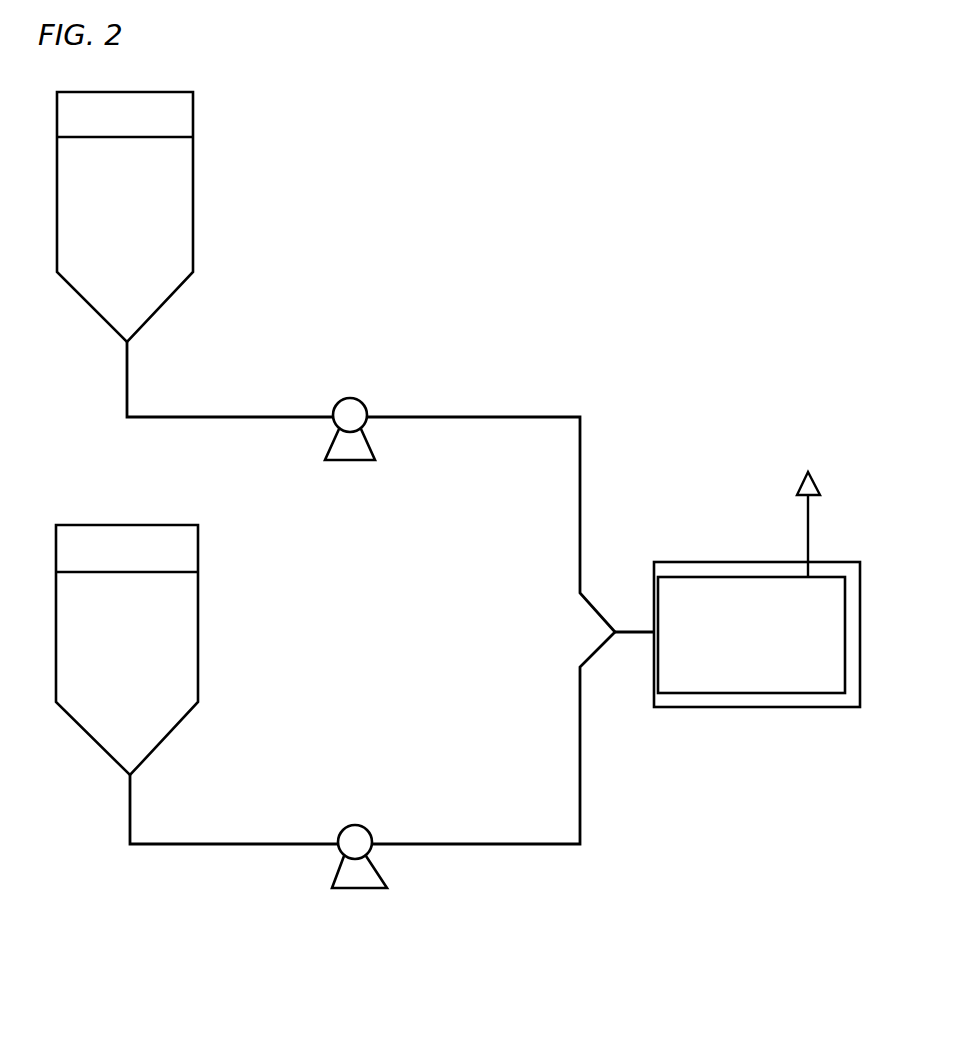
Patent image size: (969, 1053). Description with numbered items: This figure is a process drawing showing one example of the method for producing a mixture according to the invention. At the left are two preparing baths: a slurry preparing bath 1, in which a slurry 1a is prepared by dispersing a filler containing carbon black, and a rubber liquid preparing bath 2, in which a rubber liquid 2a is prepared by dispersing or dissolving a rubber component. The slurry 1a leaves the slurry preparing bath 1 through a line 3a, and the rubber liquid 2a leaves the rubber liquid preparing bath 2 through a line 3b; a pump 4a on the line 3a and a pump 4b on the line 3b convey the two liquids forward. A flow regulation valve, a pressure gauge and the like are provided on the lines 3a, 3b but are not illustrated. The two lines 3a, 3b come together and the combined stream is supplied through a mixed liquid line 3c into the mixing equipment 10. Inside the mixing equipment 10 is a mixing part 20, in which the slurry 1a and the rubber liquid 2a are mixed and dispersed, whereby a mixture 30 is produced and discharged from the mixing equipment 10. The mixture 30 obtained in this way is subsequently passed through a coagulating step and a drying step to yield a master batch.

The slurry preparing bath 1 is at (193, 190).
The slurry 1a is at (165, 258).
The rubber liquid preparing bath 2 is at (198, 605).
The rubber liquid 2a is at (178, 668).
The line 3a is at (463, 416).
The line 3b is at (457, 843).
The mixed liquid line 3c is at (628, 632).
The pump 4a is at (363, 398).
The pump 4b is at (366, 830).
The mixing equipment 10 is at (750, 707).
The mixing part 20 is at (723, 593).
The mixture 30 is at (813, 506).